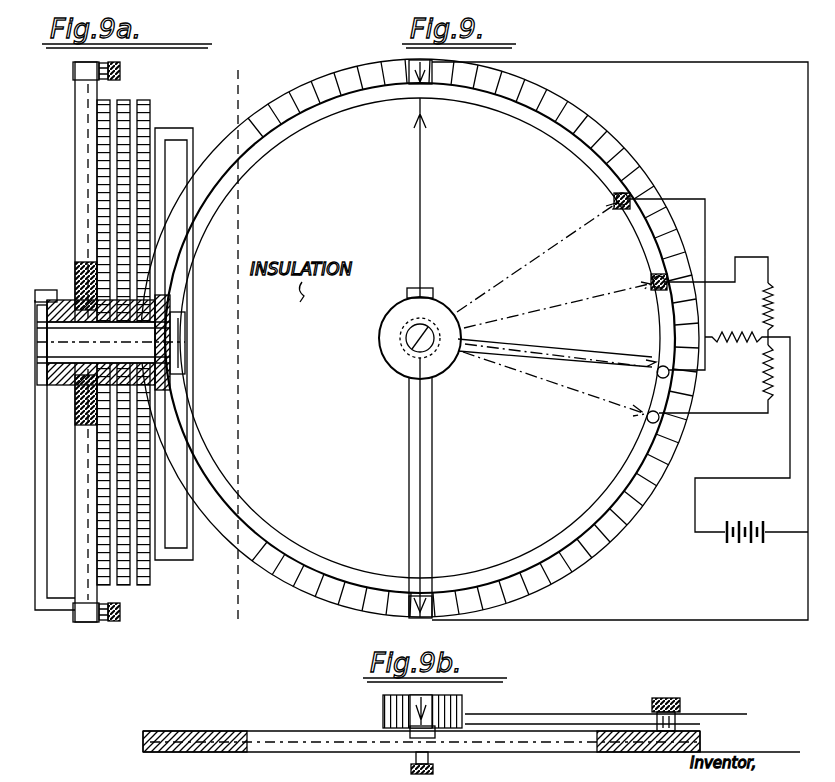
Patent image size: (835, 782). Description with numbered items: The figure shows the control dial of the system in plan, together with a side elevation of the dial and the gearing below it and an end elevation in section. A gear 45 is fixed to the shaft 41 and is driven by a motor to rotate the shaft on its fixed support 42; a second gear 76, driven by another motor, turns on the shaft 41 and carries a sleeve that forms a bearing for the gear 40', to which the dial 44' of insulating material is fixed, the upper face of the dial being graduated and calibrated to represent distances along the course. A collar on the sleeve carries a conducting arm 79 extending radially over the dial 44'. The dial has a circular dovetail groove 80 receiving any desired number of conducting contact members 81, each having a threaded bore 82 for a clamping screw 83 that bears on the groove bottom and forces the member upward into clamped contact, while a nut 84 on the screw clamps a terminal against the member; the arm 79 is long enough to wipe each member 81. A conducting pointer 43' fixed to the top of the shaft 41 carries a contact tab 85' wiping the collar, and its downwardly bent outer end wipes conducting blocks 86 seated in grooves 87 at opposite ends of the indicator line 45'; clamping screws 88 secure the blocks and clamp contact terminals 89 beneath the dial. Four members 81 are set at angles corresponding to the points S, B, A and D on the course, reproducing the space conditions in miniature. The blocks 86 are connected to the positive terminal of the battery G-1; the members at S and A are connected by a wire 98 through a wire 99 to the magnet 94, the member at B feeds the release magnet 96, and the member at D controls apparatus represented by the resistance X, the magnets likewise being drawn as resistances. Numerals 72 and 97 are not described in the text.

In FIG. 9A, the gear 40' is at (151, 332).
In FIG. 9B, the gear 40' is at (422, 711).
In FIG. 9, the shaft 41 is at (405, 340).
In FIG. 9A, the shaft 41 is at (186, 345).
In FIG. 9A, the fixed support 42 is at (145, 408).
In FIG. 9, the conducting pointer 43' is at (448, 487).
In FIG. 9A, the conducting pointer 43' is at (79, 497).
In FIG. 9B, the conducting pointer 43' is at (495, 705).
In FIG. 9, the dial 44' is at (420, 338).
In FIG. 9A, the dial 44' is at (67, 342).
In FIG. 9B, the dial 44' is at (471, 727).
In FIG. 9A, the gear 45 is at (188, 463).
In FIG. 9, the indicator line 45' is at (393, 198).
In FIG. 9A, the support 72 is at (160, 196).
In FIG. 9A, the gear 76 is at (125, 504).
In FIG. 9, the arm 79 is at (545, 340).
In FIG. 9B, the arm 79 is at (538, 726).
In FIG. 9, the circular groove 80 is at (320, 570).
In FIG. 9B, the circular groove 80 is at (175, 732).
In FIG. 9, the contact member 81 is at (630, 197).
In FIG. 9B, the contact member 81 is at (700, 736).
In FIG. 9, the screwthreaded bore 82 is at (660, 418).
In FIG. 9B, the clamping screw 83 is at (657, 712).
In FIG. 9B, the nut 84 is at (680, 708).
In FIG. 9, the contact tab 85' is at (442, 278).
In FIG. 9A, the contact tab 85' is at (63, 338).
In FIG. 9, the conducting block 86 is at (432, 66).
In FIG. 9A, the conducting block 86 is at (75, 76).
In FIG. 9B, the conducting block 86 is at (405, 738).
In FIG. 9, the groove 87 is at (409, 68).
In FIG. 9B, the groove 87 is at (440, 742).
In FIG. 9A, the clamping screw 88 is at (120, 70).
In FIG. 9B, the clamping screw 88 is at (432, 770).
In FIG. 9A, the contact terminal 89 is at (100, 624).
In FIG. 9B, the contact terminal 89 is at (414, 756).
In FIG. 9, the magnet 94 is at (751, 420).
In FIG. 9, the release magnet 96 is at (771, 300).
In FIG. 9, the conductor frame 97 is at (808, 172).
In FIG. 9, the wire 98 is at (705, 216).
In FIG. 9, the wire 99 is at (707, 340).
In FIG. 9, the point S is at (536, 250).
In FIG. 9, the point B is at (557, 293).
In FIG. 9, the point A is at (555, 349).
In FIG. 9, the point D is at (554, 390).
In FIG. 9, the resistance X is at (762, 381).
In FIG. 9, the battery G-1 is at (742, 543).